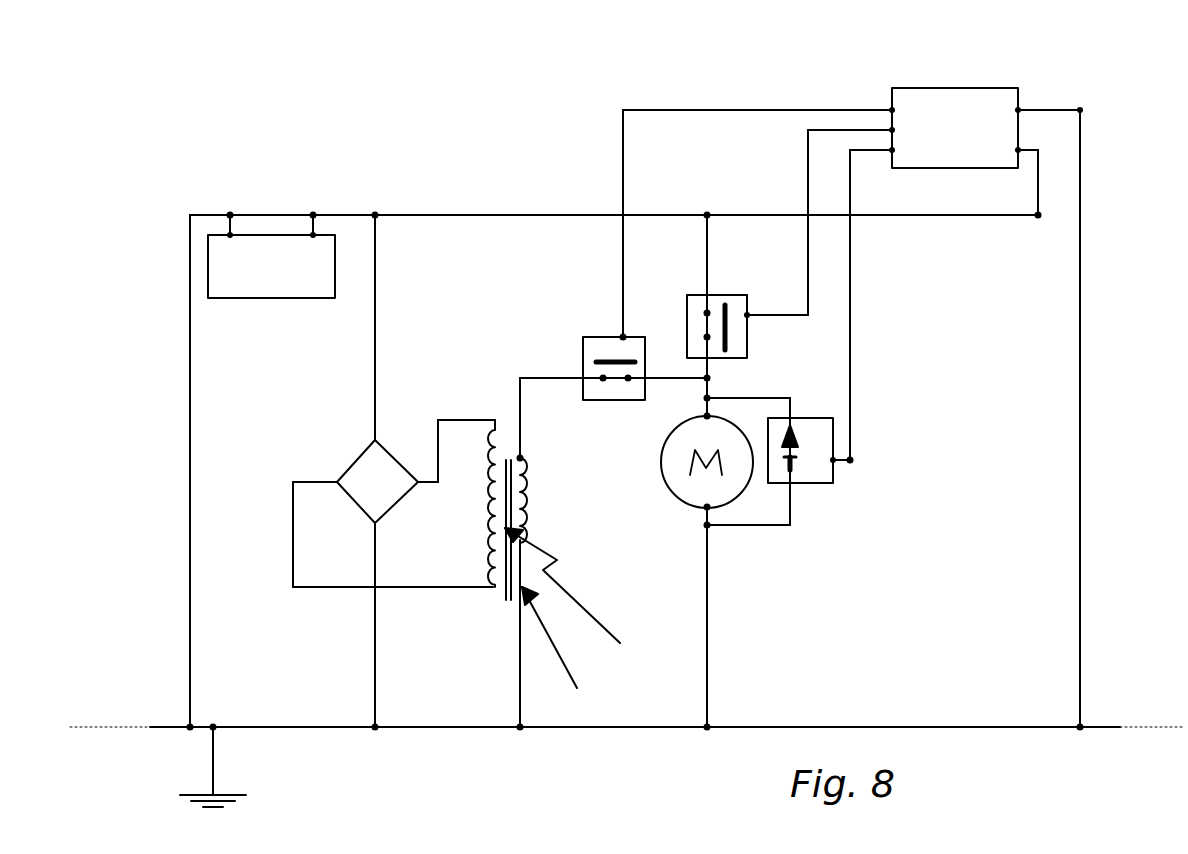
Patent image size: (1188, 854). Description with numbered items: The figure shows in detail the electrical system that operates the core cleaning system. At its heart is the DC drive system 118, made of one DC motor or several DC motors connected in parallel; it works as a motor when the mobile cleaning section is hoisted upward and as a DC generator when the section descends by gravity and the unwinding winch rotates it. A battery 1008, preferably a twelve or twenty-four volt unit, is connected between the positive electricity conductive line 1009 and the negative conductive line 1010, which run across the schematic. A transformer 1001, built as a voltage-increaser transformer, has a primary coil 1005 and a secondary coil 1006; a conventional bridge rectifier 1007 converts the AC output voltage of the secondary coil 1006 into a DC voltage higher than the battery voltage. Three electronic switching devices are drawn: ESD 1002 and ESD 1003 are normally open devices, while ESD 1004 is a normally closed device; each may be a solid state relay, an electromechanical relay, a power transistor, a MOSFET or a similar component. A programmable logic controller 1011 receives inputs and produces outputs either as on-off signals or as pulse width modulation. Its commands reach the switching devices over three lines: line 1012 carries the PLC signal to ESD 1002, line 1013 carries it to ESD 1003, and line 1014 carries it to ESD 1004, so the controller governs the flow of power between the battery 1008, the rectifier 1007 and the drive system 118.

The drive system 118 is at (692, 483).
The transformer 1001 is at (562, 608).
The electronic switching device 1002 is at (747, 340).
The electronic switching device 1003 is at (588, 337).
The electronic switching device 1004 is at (833, 478).
The primary coil 1005 is at (528, 494).
The secondary coil 1006 is at (493, 532).
The bridge rectifier 1007 is at (390, 455).
The battery 1008 is at (275, 255).
The positive electricity conductive line 1009 is at (446, 215).
The negative conductive line 1010 is at (190, 517).
The programmable logic controller 1011 is at (965, 95).
The signal line 1012 is at (808, 162).
The signal line 1013 is at (712, 110).
The signal line 1014 is at (850, 320).